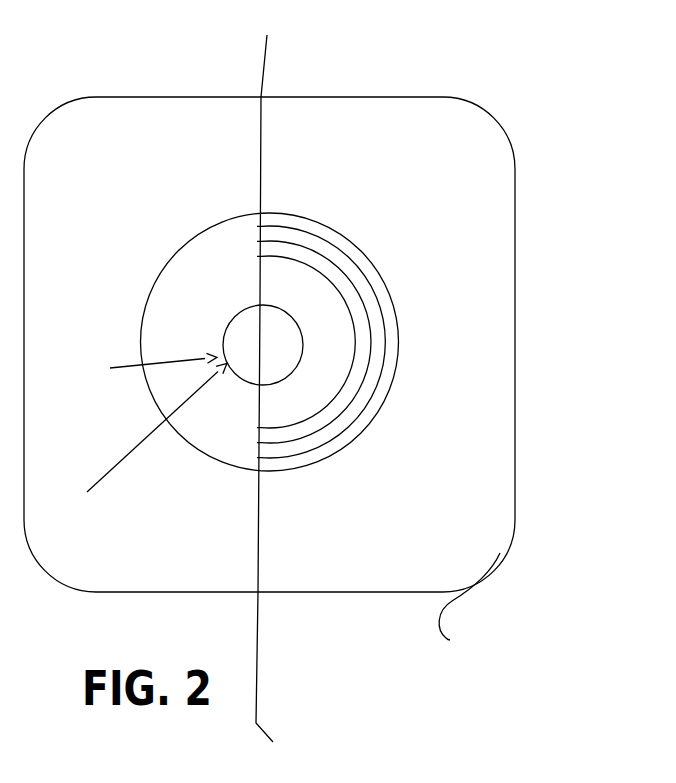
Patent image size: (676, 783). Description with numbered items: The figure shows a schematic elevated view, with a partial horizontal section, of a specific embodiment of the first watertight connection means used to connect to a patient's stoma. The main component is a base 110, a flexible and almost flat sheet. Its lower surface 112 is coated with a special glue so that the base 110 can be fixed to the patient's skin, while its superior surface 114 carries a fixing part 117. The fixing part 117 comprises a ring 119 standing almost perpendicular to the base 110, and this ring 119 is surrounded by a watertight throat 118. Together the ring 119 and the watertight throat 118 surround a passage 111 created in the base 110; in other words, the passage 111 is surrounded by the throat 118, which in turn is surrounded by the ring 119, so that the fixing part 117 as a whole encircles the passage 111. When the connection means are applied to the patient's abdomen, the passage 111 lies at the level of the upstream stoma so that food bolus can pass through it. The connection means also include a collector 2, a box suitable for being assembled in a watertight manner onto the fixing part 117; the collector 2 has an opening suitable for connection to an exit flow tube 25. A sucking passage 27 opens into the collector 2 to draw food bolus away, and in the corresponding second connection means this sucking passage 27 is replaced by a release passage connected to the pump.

The collector 2 is at (196, 297).
The exit flow tube 25 is at (147, 386).
The sucking passage 27 is at (148, 449).
The base 110 is at (446, 124).
The passage 111 is at (281, 352).
The lower surface 112 is at (450, 640).
The superior surface 114 is at (228, 192).
The fixing part 117 is at (360, 341).
The watertight throat 118 is at (318, 260).
The ring 119 is at (366, 276).